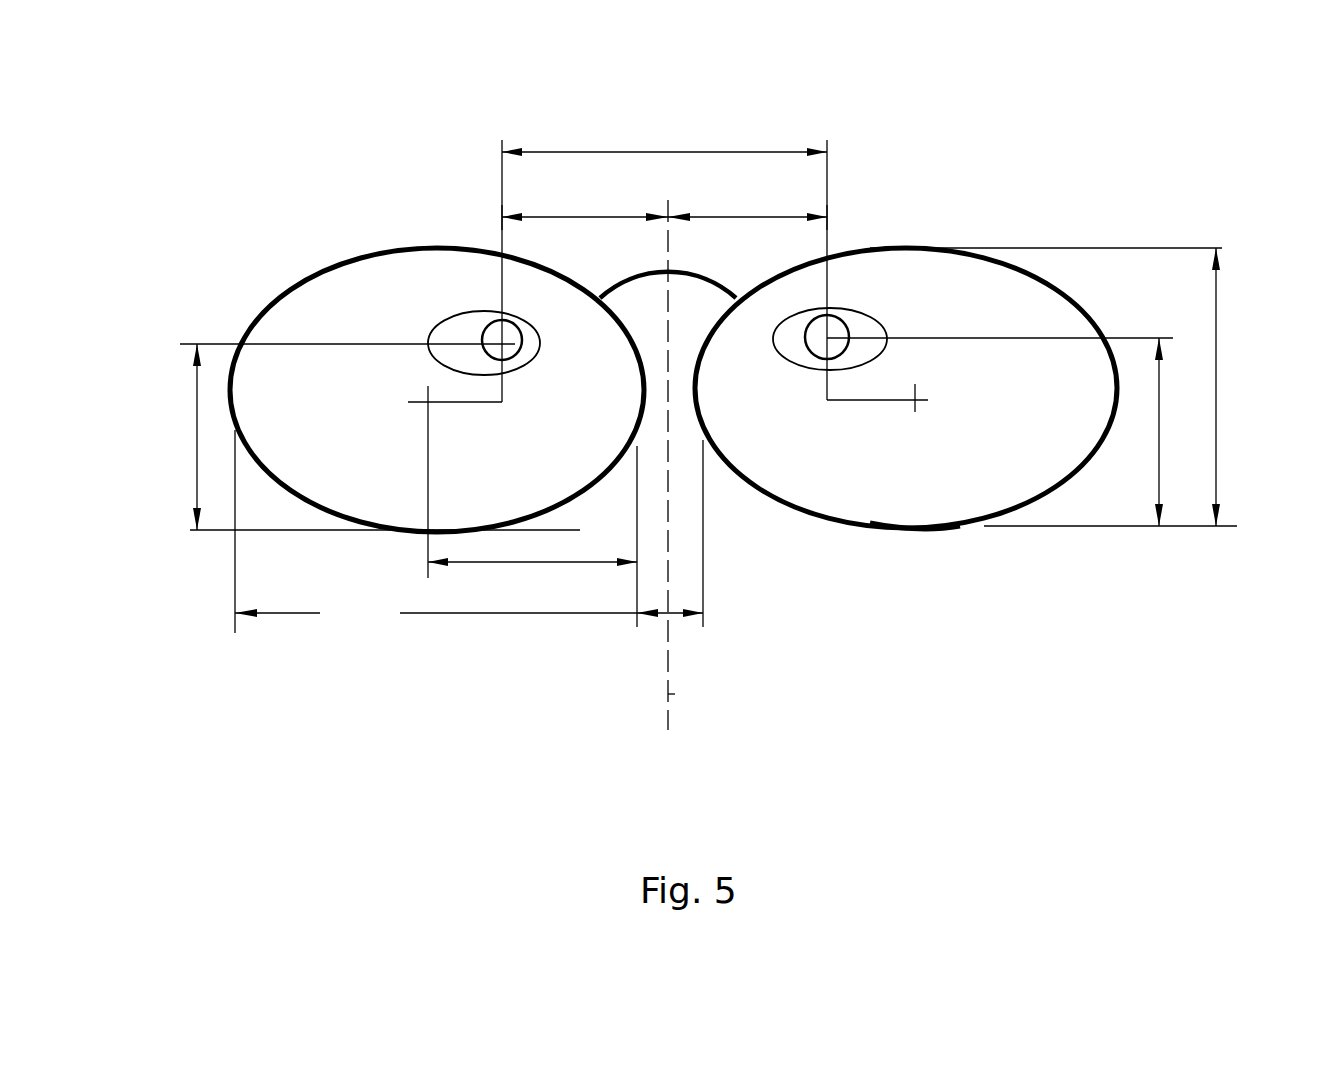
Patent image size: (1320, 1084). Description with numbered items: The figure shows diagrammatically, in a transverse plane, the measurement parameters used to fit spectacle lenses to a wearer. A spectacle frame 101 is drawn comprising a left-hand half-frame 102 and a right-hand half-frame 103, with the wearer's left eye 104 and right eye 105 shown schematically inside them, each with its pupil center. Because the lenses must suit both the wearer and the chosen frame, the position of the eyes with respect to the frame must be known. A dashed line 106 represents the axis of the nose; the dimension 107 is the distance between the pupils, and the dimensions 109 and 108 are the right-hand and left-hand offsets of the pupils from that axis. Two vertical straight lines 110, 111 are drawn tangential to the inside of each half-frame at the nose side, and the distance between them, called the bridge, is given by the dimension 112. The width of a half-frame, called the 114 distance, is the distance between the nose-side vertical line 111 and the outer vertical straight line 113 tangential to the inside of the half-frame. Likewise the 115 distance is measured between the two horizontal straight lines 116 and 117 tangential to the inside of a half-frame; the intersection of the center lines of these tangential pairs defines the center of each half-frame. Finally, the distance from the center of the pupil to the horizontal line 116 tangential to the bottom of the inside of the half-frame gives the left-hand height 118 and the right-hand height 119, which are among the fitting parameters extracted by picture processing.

The spectacle frame 101 is at (930, 226).
The left-hand half-frame 102 is at (922, 532).
The right-hand half-frame 103 is at (333, 266).
The left eye 104 is at (845, 311).
The right eye 105 is at (438, 325).
The axis of the nose 106 is at (705, 465).
The distance between the pupils 107 is at (660, 152).
The left hand offset 108 is at (827, 172).
The right hand offset 109 is at (580, 215).
The vertical straight line tangential to the inside of the half-frame at the nose si 110 is at (703, 557).
The vertical straight line tangential to the inside of the half-frame at the nose si 111 is at (637, 575).
The bridge dimension 112 is at (675, 613).
The vertical straight line tangential to the inside of the half-frame 113 is at (235, 548).
The 114 distance 114 is at (423, 628).
The 115 distance 115 is at (1216, 399).
The horizontal straight line tangential to the bottom of the inside of the half-fram 116 is at (1068, 532).
The horizontal straight line tangential to the inside of the half-frame 117 is at (1072, 247).
The left hand height 118 is at (1029, 432).
The right hand height 119 is at (197, 460).